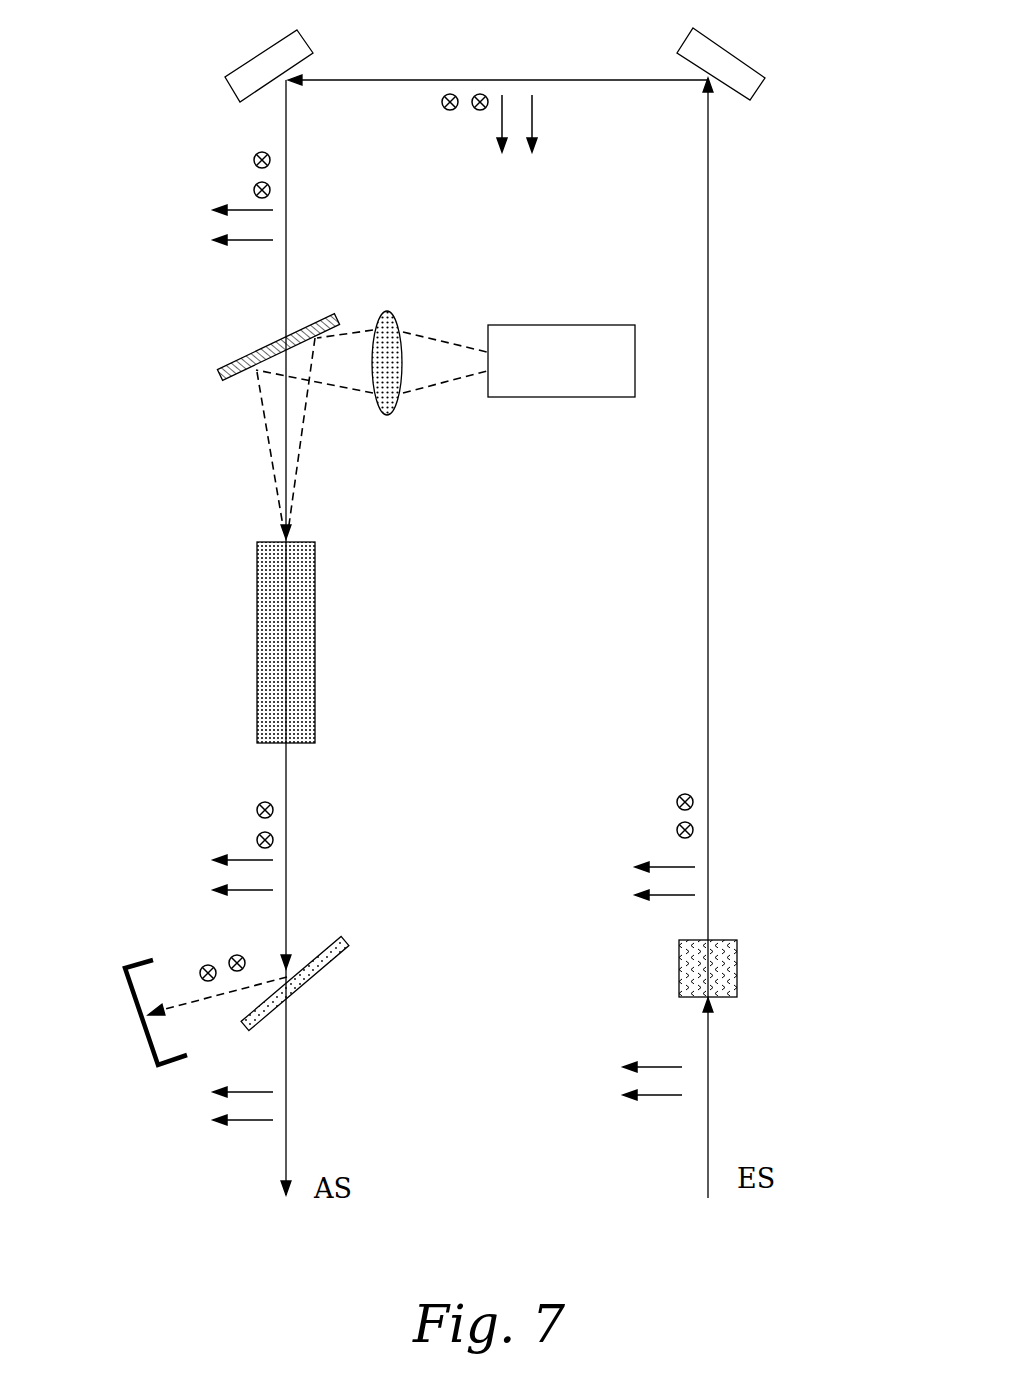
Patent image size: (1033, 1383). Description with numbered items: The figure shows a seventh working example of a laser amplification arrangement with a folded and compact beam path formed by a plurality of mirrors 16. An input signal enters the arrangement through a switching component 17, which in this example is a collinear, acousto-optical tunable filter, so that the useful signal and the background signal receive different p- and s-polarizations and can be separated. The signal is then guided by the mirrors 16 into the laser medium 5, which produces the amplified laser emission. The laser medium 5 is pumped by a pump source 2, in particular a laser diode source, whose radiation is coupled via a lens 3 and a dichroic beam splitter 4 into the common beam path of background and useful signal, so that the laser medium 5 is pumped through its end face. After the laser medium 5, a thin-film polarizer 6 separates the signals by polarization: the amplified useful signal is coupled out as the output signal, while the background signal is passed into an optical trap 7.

The pump source 2 is at (575, 333).
The lens 3 is at (437, 342).
The dichroic beam splitter 4 is at (251, 347).
The laser medium 5 is at (345, 642).
The thin-film polarizer 6 is at (338, 983).
The optical trap 7 is at (112, 992).
The mirrors 16 is at (495, 60).
The switching component 17 is at (763, 954).